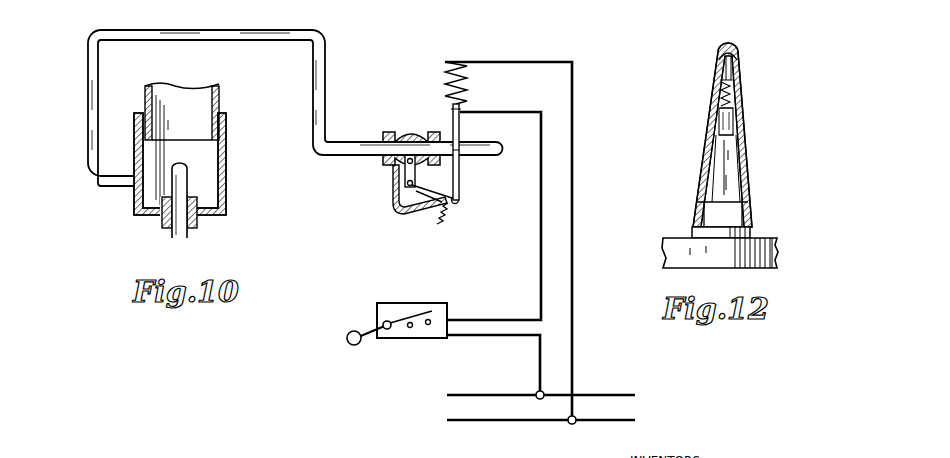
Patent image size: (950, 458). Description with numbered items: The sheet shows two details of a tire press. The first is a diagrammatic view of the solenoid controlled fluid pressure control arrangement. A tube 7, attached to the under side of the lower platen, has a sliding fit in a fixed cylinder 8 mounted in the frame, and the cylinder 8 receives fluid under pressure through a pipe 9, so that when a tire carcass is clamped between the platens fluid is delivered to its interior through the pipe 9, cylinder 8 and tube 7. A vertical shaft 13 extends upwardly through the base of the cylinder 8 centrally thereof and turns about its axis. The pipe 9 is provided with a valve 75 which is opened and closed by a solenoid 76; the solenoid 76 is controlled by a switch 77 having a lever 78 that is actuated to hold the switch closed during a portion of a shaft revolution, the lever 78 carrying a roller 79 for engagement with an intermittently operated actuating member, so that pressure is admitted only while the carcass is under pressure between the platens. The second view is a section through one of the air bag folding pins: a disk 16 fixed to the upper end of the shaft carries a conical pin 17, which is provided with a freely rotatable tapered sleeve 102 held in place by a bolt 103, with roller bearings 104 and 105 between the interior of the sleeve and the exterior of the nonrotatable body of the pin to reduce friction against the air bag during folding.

In FIG. 10, the pipe 9 is at (89, 70).
In FIG. 10, the tube 7 is at (221, 96).
In FIG. 10, the cylinder 8 is at (226, 170).
In FIG. 10, the vertical shaft 13 is at (190, 233).
In FIG. 10, the valve 75 is at (417, 132).
In FIG. 10, the solenoid 76 is at (470, 90).
In FIG. 10, the switch 77 is at (417, 303).
In FIG. 10, the lever 78 is at (367, 337).
In FIG. 10, the roller 79 is at (351, 331).
In FIG. 12, the bolt 103 is at (736, 50).
In FIG. 12, the roller bearing 104 is at (745, 118).
In FIG. 12, the tapered sleeve 102 is at (750, 131).
In FIG. 12, the roller bearing 105 is at (752, 213).
In FIG. 12, the conical pin 17 is at (688, 228).
In FIG. 12, the disk 16 is at (780, 253).